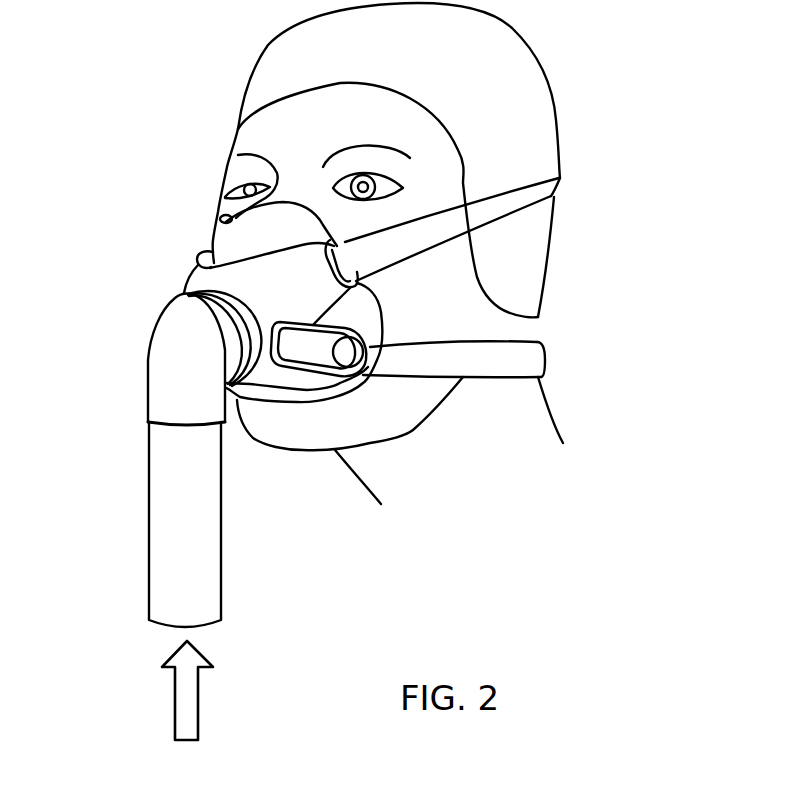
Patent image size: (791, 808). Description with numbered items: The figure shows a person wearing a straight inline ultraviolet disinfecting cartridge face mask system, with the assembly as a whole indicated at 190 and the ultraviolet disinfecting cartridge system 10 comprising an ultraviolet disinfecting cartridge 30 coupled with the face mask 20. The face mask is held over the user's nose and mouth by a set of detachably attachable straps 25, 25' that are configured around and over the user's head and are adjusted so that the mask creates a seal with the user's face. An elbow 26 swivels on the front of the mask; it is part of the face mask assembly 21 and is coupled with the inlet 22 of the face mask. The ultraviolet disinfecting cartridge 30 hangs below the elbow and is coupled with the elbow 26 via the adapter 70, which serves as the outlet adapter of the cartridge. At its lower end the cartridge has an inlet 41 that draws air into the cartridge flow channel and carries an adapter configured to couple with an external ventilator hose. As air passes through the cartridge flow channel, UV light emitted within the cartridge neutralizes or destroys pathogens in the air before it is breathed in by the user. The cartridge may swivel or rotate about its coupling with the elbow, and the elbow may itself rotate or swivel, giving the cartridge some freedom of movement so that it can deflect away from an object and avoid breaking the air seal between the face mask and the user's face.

The patient interface system 190 is at (177, 261).
The face mask 20 is at (268, 293).
The face mask assembly 21 is at (230, 383).
The inlet 22 is at (184, 292).
The detachably attachable strap 25 is at (452, 203).
The detachably attachable strap 25' is at (454, 326).
The elbow 26 is at (163, 348).
The adapter 70 is at (147, 422).
The ultraviolet disinfecting cartridge 30 is at (162, 515).
The ultraviolet disinfecting cartridge system 10 is at (187, 438).
The inlet 41 is at (167, 632).